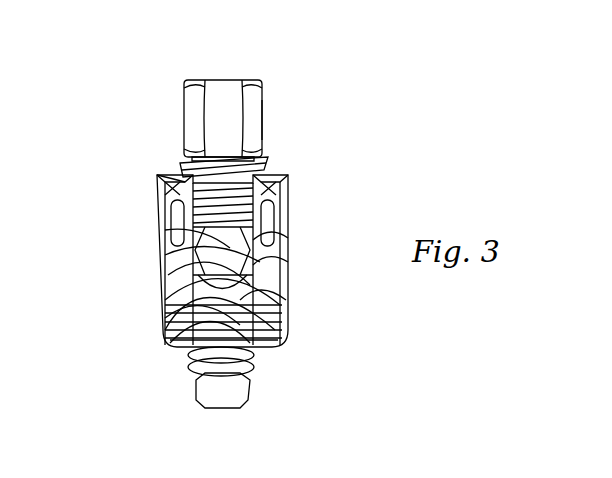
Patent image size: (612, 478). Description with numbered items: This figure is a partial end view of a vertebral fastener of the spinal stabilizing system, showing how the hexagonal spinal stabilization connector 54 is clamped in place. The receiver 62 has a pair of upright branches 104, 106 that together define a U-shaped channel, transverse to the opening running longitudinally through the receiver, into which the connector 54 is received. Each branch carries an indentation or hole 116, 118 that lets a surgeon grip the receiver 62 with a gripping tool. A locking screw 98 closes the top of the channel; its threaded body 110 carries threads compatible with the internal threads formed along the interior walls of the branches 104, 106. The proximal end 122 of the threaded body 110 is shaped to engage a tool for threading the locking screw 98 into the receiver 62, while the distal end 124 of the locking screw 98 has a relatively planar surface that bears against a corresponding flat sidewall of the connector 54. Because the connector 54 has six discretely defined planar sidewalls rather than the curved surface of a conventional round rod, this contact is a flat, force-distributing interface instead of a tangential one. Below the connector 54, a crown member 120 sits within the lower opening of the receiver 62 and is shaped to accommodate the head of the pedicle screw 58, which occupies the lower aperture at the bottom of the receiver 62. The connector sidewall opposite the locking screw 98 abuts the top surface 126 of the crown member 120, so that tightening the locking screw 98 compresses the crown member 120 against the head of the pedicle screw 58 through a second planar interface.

The proximal end 122 is at (222, 80).
The locking screw 98 is at (268, 120).
The threaded body 110 is at (272, 156).
The upright branch 106 is at (290, 178).
The upright branch 104 is at (160, 178).
The indentation or hole 116 is at (170, 210).
The indentation or hole 118 is at (276, 214).
The spinal stabilization connector 54 is at (200, 255).
The top surface 126 is at (165, 270).
The receiver 62 is at (157, 285).
The distal end 124 is at (278, 232).
The crown member 120 is at (284, 330).
The pedicle screw 58 is at (252, 380).